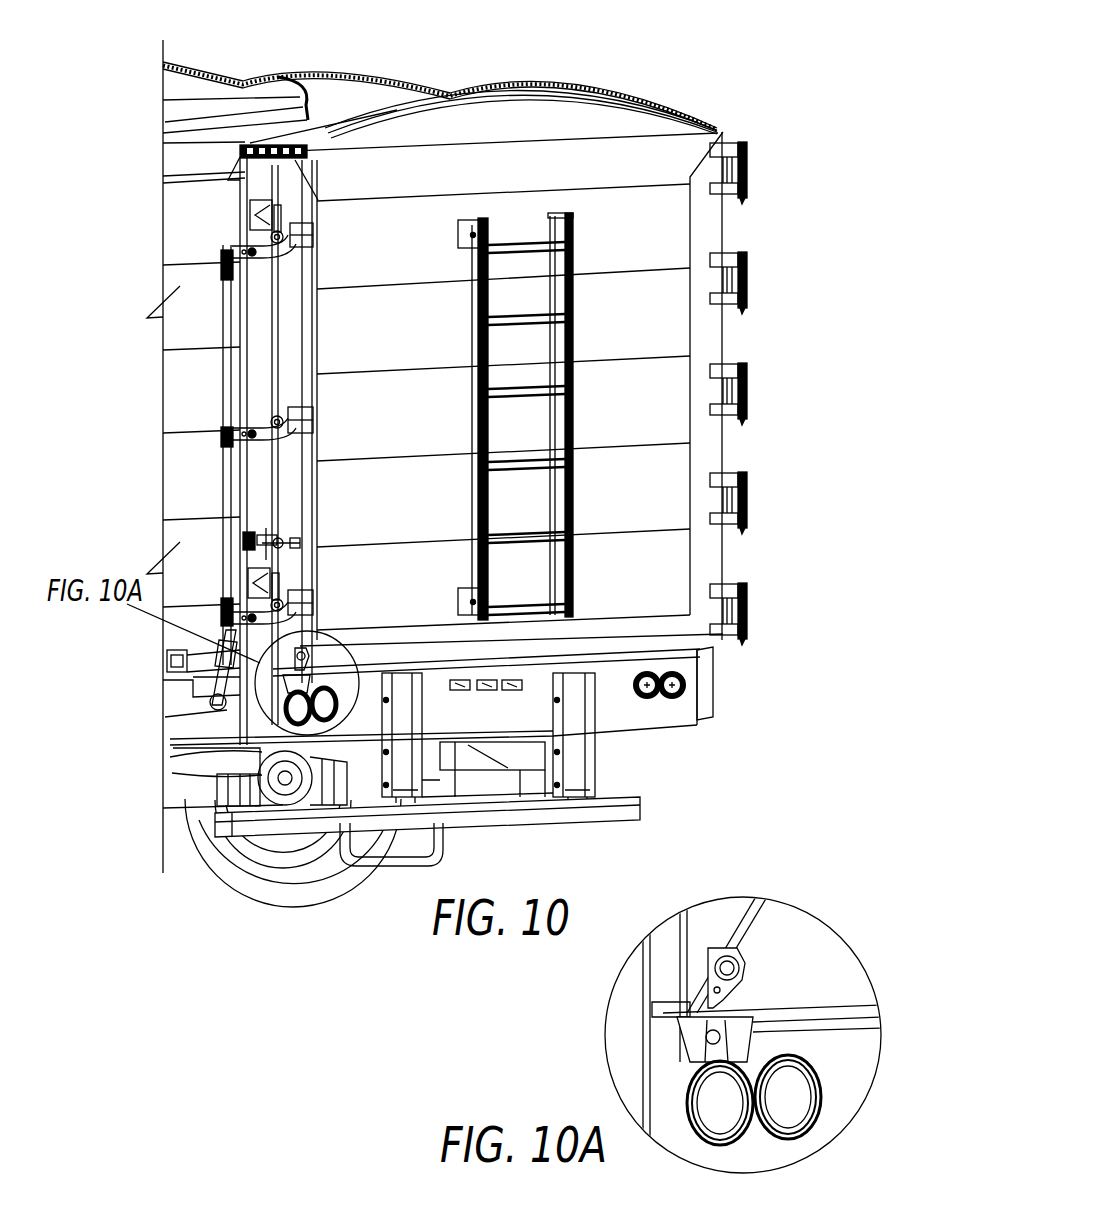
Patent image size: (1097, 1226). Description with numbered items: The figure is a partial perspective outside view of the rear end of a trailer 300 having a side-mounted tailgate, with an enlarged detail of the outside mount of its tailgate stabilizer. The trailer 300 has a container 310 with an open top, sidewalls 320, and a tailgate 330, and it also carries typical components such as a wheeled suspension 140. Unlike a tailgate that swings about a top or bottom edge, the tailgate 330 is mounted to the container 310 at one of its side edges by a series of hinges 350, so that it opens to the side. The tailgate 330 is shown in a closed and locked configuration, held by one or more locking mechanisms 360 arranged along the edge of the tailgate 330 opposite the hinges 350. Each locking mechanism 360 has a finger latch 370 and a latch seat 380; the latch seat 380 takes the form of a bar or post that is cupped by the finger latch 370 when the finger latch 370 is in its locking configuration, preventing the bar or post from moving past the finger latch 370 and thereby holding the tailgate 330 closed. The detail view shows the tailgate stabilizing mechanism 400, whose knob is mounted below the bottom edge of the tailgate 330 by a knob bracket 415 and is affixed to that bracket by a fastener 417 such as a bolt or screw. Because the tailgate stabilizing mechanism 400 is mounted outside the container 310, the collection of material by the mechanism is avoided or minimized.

In FIG. 10, the trailer 300 is at (275, 74).
In FIG. 10, the container 310 is at (654, 82).
In FIG. 10, the sidewalls 320 is at (188, 243).
In FIG. 10, the tailgate 330 is at (653, 333).
In FIG. 10, the hinges 350 is at (747, 168).
In FIG. 10, the locking mechanism 360 is at (163, 466).
In FIG. 10, the finger latch 370 is at (262, 447).
In FIG. 10, the latch seat 380 is at (272, 418).
In FIG. 10, the wheeled suspension 140 is at (204, 900).
In FIG. 10A, the tailgate stabilizing mechanism 400 is at (604, 1011).
In FIG. 10A, the knob bracket 415 is at (688, 1050).
In FIG. 10A, the fastener 417 is at (694, 1043).